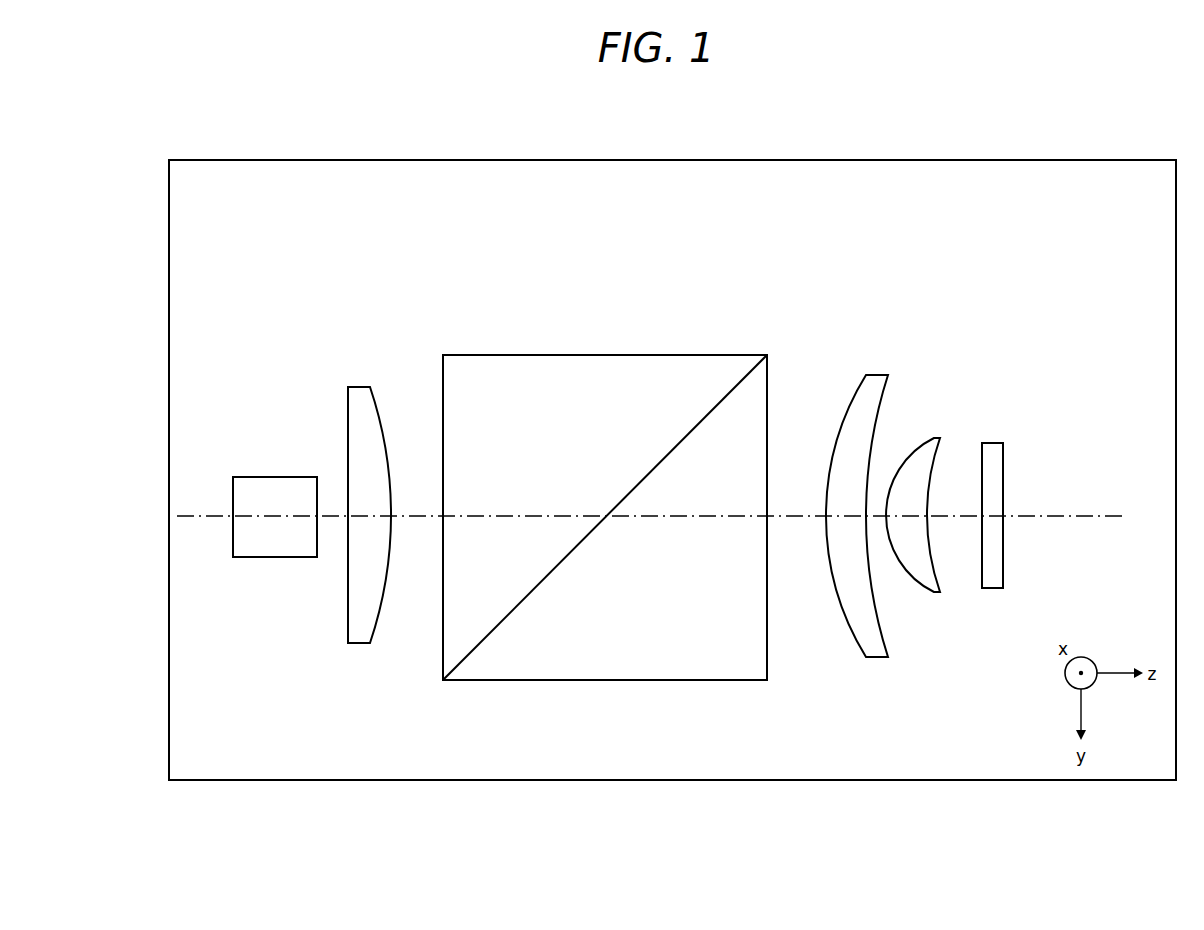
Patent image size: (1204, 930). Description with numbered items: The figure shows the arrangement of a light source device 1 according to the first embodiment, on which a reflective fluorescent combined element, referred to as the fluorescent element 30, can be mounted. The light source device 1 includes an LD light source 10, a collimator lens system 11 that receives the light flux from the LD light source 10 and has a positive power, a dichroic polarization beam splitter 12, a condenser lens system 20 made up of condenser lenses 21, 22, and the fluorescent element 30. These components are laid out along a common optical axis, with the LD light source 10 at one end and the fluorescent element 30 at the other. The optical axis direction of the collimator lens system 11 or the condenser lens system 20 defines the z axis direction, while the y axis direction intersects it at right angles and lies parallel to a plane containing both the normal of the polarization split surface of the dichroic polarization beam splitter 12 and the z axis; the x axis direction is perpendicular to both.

The light source device 1 is at (562, 160).
The LD light source 10 is at (254, 477).
The collimator lens system 11 is at (356, 385).
The dichroic polarization beam splitter 12 is at (732, 390).
The condenser lens system 20 is at (847, 300).
The condenser lens 21 is at (880, 373).
The condenser lens 22 is at (939, 437).
The fluorescent element 30 is at (993, 443).